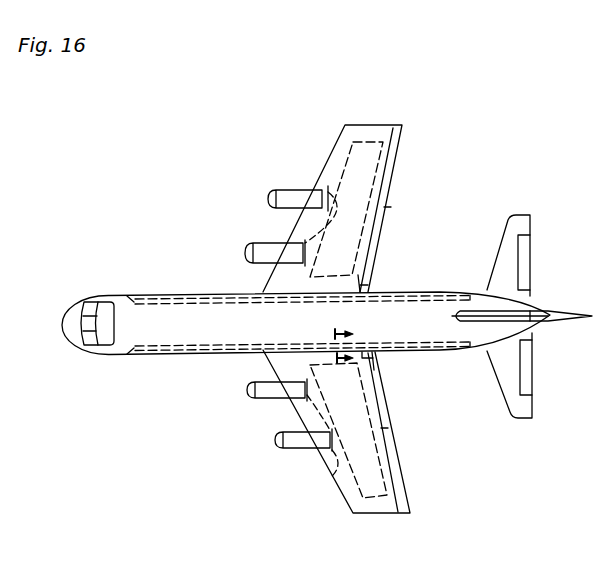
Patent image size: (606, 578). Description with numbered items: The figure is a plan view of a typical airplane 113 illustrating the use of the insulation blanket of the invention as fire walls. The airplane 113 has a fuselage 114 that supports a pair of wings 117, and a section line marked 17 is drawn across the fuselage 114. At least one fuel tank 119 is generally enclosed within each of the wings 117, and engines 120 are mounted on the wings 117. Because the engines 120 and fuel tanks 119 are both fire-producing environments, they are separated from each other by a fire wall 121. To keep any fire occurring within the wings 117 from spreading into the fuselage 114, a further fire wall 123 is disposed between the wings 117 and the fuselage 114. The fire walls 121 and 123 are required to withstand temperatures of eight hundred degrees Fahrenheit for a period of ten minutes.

The section line 17- 17 is at (339, 350).
The airplane 113 is at (190, 268).
The fuselage 114 is at (390, 291).
The wings 117 is at (369, 133).
The fuel tank 119 is at (377, 185).
The engines 120 is at (277, 250).
The fire wall 121 is at (330, 188).
The fire wall 123 is at (363, 267).